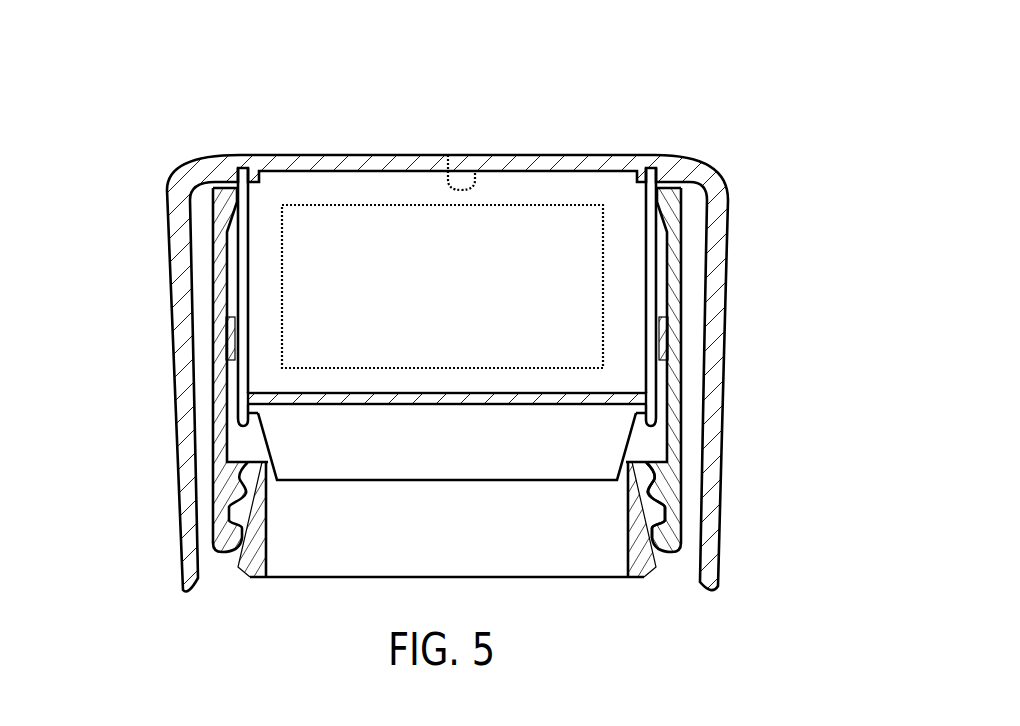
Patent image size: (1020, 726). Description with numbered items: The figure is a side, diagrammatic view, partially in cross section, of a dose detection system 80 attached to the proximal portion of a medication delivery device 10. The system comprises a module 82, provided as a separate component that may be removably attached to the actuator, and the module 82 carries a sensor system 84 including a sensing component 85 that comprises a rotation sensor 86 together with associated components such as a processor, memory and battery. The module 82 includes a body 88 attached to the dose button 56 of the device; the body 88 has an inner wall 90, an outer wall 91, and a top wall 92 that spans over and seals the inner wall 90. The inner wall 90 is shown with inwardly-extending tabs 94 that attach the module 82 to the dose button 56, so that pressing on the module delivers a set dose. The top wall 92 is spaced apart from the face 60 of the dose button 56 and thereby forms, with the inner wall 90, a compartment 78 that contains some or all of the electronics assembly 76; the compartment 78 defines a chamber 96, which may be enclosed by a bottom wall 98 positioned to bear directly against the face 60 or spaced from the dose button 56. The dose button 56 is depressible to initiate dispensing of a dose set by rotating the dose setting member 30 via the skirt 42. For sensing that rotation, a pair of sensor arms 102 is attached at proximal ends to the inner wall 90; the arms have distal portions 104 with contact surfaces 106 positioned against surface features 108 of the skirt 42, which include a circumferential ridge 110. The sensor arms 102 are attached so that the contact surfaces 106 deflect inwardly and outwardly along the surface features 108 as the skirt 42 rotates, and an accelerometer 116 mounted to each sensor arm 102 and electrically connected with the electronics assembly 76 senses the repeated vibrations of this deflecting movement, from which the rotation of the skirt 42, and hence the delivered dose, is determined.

The medication delivery device 10 is at (473, 354).
The dose setting member 30 is at (511, 559).
The skirt 42 is at (511, 566).
The dose button 56 is at (447, 446).
The face 60 is at (458, 374).
The electronics assembly 76 is at (355, 237).
The compartment 78 is at (448, 155).
The dose detection system 80 is at (435, 297).
The module 82 is at (385, 321).
The sensor system 84 is at (603, 421).
The sensing component 85 is at (735, 239).
The rotation sensor 86 is at (645, 326).
The body 88 is at (385, 297).
The inner wall 90 is at (588, 256).
The outer wall 91 is at (188, 318).
The top wall 92 is at (522, 162).
The tabs 94 is at (654, 421).
The chamber 96 is at (458, 260).
The bottom wall 98 is at (458, 423).
The sensor arms 102 is at (452, 335).
The distal portions 104 is at (447, 335).
The contact surfaces 106 is at (718, 561).
The surface features 108 is at (651, 570).
The circumferential ridge 110 is at (648, 487).
The accelerometer 116 is at (668, 345).